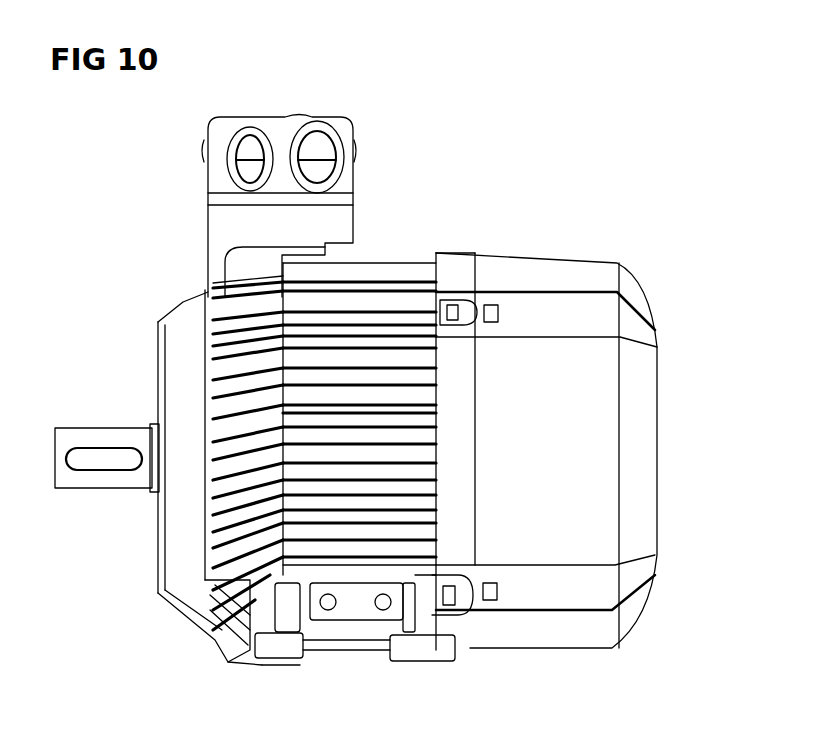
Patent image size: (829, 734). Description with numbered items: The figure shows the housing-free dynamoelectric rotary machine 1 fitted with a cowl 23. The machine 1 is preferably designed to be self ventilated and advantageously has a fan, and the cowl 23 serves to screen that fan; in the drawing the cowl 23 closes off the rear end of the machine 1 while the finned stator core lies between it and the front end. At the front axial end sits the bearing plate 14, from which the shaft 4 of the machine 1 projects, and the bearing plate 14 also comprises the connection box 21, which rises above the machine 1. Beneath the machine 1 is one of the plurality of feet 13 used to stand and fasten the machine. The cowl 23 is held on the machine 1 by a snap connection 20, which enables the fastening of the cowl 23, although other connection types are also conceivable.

The dynamoelectric rotary machine 1 is at (675, 210).
The shaft 4 is at (67, 478).
The foot 13 is at (453, 655).
The bearing plate 14 is at (172, 370).
The snap connection 20 is at (477, 342).
The connection box 21 is at (212, 215).
The cowl 23 is at (600, 468).